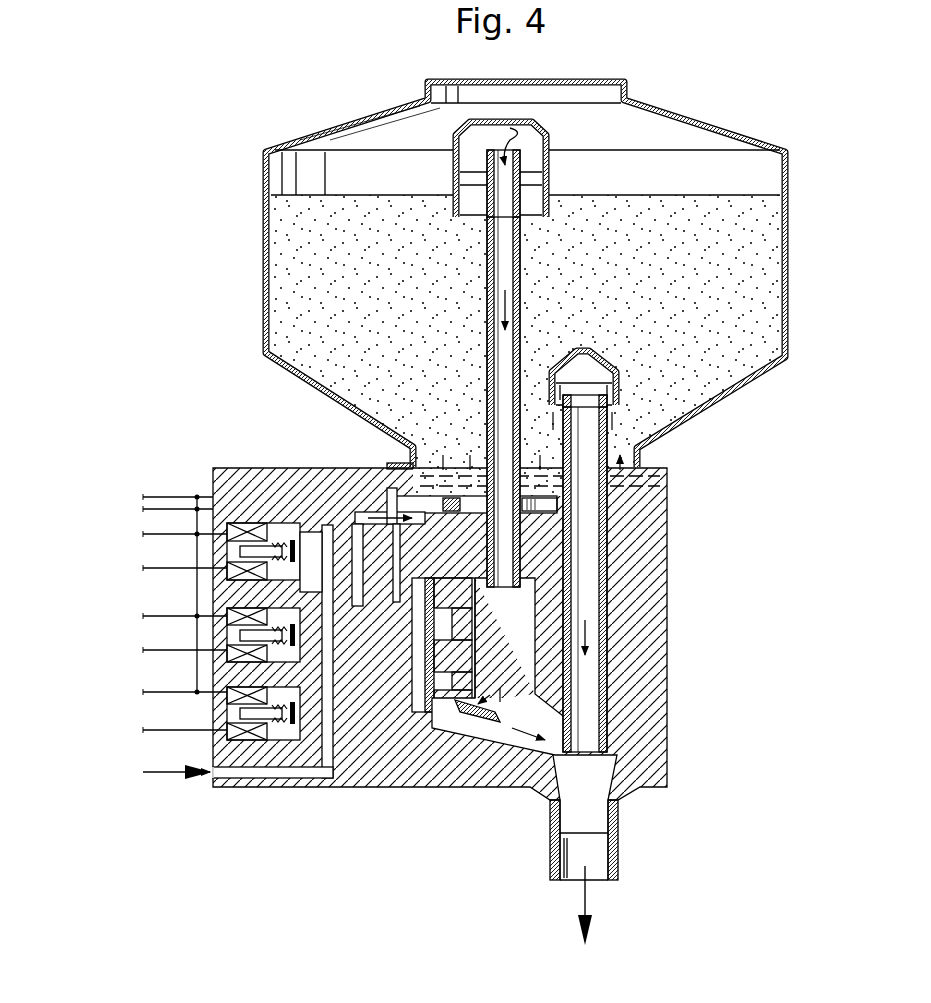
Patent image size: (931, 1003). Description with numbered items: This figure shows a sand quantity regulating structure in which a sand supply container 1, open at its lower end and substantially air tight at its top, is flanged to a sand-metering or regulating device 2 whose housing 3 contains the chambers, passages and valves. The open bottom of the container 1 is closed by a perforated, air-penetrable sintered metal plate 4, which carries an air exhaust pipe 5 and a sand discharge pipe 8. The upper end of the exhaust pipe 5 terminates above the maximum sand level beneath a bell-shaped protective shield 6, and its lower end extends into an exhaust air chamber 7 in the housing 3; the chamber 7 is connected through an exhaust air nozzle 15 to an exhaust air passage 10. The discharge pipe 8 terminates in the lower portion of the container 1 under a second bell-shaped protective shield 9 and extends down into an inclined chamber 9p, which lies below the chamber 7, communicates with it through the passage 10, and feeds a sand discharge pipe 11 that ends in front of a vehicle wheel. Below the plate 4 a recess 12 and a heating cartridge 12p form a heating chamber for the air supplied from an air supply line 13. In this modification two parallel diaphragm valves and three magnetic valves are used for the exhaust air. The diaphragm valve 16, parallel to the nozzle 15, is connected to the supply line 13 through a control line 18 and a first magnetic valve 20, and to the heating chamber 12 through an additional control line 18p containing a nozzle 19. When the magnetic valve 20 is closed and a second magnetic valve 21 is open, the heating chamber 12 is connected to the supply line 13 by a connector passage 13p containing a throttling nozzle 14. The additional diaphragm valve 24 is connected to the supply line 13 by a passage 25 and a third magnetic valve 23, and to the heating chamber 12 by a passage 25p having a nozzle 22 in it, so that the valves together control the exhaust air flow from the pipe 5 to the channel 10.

The sand supply container 1 is at (735, 150).
The sand-metering or regulating device 2 is at (690, 628).
The housing 3 is at (674, 677).
The sintered metal plate 4 is at (540, 470).
The air exhaust pipe 5 is at (490, 305).
The bell-shaped protective shield 6 is at (533, 126).
The exhaust air chamber 7 is at (524, 705).
The sand discharge pipe 8 is at (593, 575).
The bell-shaped protective shield 9 is at (602, 373).
The inclined chamber 9p is at (600, 768).
The exhaust air passage 10 is at (533, 790).
The sand discharge pipe 11 is at (605, 855).
The heating chamber recess 12 is at (615, 510).
The heating cartridge 12p is at (465, 505).
The air supply line 13 is at (270, 778).
The connector passage 13p is at (302, 520).
The nozzle or throttling orifice 14 is at (348, 530).
The exhaust air nozzle 15 is at (484, 732).
The diaphragm valve 16 is at (408, 618).
The control line 18 is at (310, 672).
The additional control line 18p is at (372, 520).
The nozzle or throttling orifice 19 is at (335, 585).
The first magnetic valve 20 is at (240, 623).
The second magnetic valve 21 is at (240, 540).
The nozzle 22 is at (400, 575).
The third magnetic valve 23 is at (240, 700).
The additional diaphragm valve 24 is at (420, 705).
The passage 25 is at (357, 712).
The passage 25p is at (390, 672).